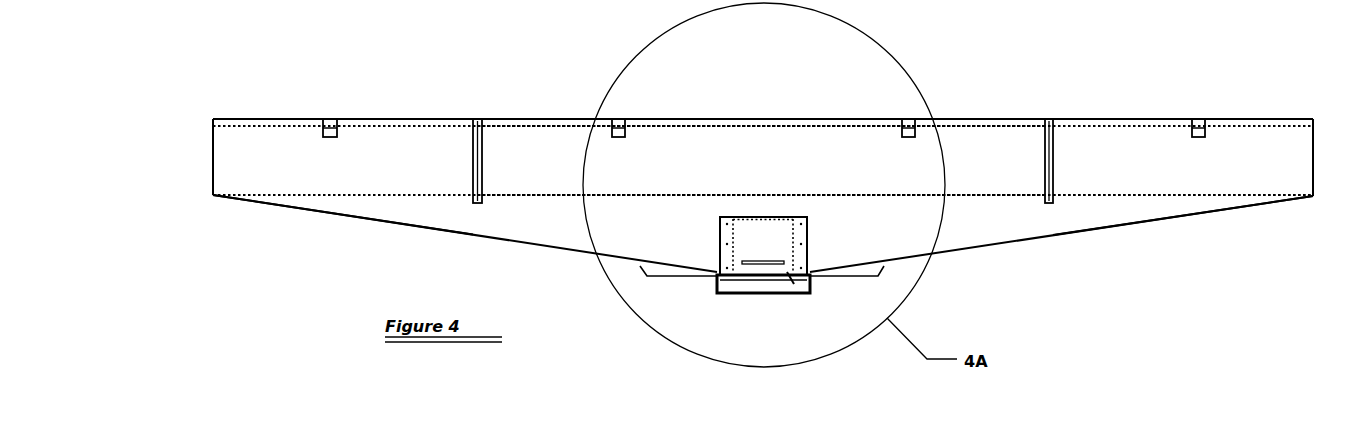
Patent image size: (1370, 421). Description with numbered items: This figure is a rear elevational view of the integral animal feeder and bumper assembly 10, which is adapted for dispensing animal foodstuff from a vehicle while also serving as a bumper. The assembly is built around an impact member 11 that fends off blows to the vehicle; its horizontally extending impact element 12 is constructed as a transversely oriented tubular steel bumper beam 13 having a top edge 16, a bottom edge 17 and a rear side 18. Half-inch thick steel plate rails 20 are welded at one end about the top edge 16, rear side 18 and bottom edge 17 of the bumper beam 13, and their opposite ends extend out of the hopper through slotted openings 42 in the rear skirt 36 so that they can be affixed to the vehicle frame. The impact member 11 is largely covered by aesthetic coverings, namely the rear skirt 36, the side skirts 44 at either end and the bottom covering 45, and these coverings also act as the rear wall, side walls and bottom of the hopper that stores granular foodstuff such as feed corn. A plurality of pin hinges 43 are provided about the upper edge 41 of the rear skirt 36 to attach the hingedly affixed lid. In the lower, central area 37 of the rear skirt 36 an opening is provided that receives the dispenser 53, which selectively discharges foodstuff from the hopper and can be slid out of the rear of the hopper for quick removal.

The integral animal feeder and bumper assembly 10 is at (350, 248).
The impact member 11 is at (358, 145).
The horizontally extending impact element 12 is at (1130, 137).
The tubular steel bumper beam 13 is at (1167, 183).
The top edge 16 is at (533, 127).
The bottom edge 17 is at (443, 194).
The rear side 18 is at (537, 168).
The steel plate rails 20 is at (477, 203).
The rear skirt 36 is at (985, 232).
The lower, central area 37 is at (706, 251).
The upper edge 41 is at (755, 119).
The slotted openings 42 is at (473, 168).
The pin hinges 43 is at (330, 119).
The side skirts 44 is at (213, 160).
The bottom covering 45 is at (535, 270).
The dispenser 53 is at (748, 314).